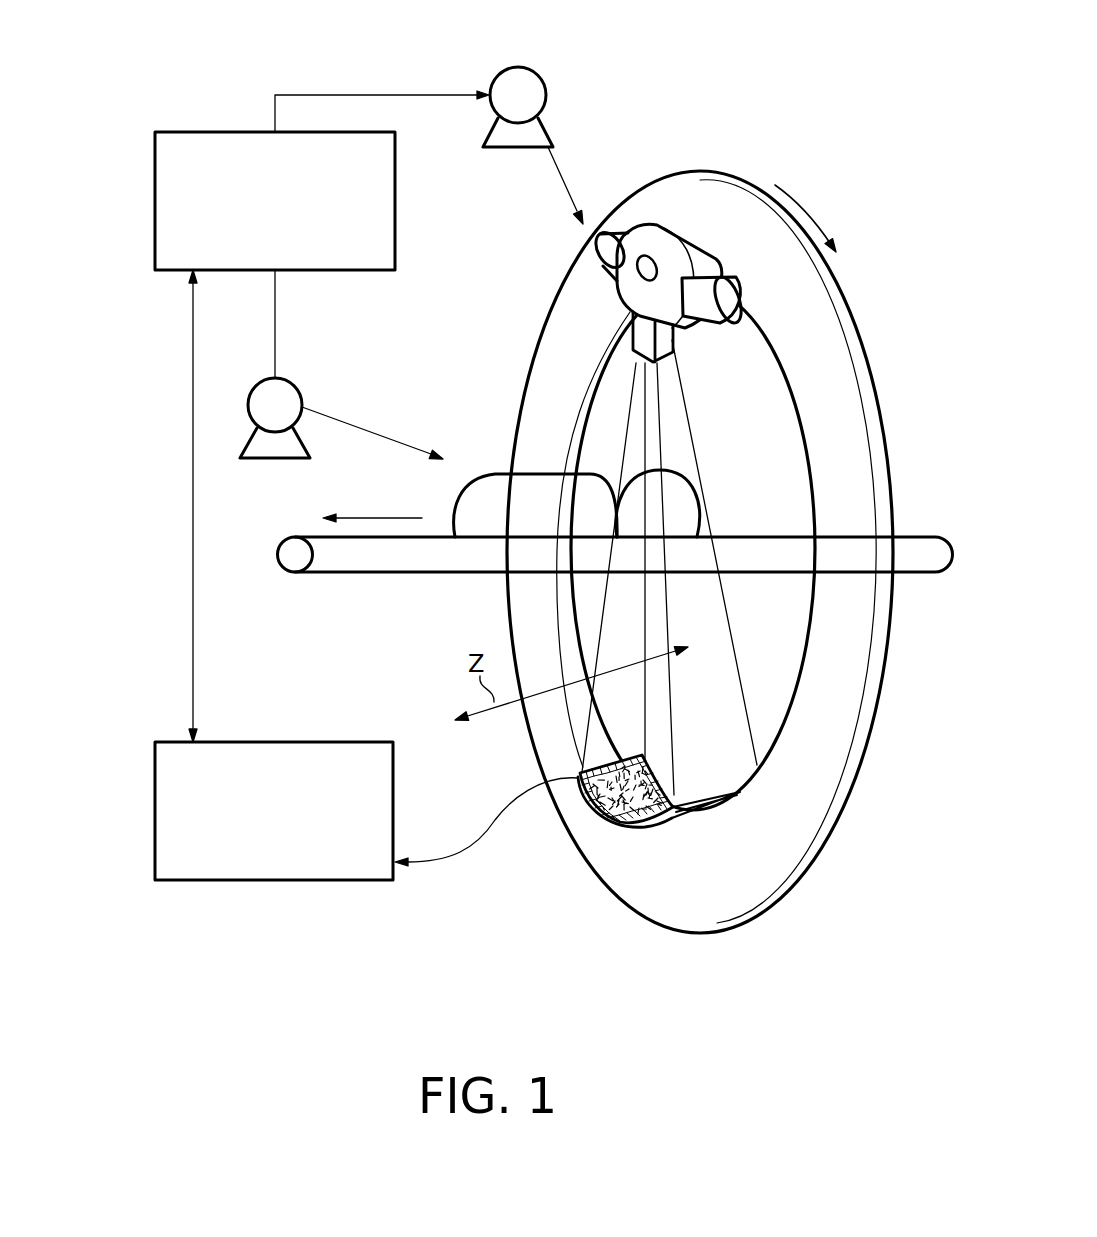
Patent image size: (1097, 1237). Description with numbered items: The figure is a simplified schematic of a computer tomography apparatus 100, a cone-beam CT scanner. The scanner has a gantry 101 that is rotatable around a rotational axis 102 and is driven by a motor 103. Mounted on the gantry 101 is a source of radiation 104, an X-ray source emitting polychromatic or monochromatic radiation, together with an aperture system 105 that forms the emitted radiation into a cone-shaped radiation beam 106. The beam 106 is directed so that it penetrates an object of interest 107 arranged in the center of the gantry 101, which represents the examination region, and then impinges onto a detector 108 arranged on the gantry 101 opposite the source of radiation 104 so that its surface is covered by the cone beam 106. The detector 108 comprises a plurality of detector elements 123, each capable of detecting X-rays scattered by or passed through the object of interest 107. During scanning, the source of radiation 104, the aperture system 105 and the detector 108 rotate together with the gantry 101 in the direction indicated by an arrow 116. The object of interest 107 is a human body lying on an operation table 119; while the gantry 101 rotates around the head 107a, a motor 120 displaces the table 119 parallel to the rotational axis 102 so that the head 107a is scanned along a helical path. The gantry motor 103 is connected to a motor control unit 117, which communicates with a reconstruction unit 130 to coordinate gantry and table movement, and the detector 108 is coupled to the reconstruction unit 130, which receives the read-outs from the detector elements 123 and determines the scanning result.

The computer tomography apparatus 100 is at (846, 74).
The gantry 101 is at (850, 690).
The rotational axis 102 is at (375, 518).
The motor 103 is at (548, 92).
The source of radiation 104 is at (672, 245).
The aperture system 105 is at (640, 333).
The cone-shaped radiation beam 106 is at (686, 424).
The object of interest 107 is at (490, 472).
The head 107a is at (672, 472).
The detector 108 is at (659, 796).
The arrow 116 is at (812, 207).
The motor control unit 117 is at (155, 210).
The operation table 119 is at (914, 537).
The motor 120 is at (302, 395).
The detector elements 123 is at (628, 772).
The reconstruction unit 130 is at (155, 812).